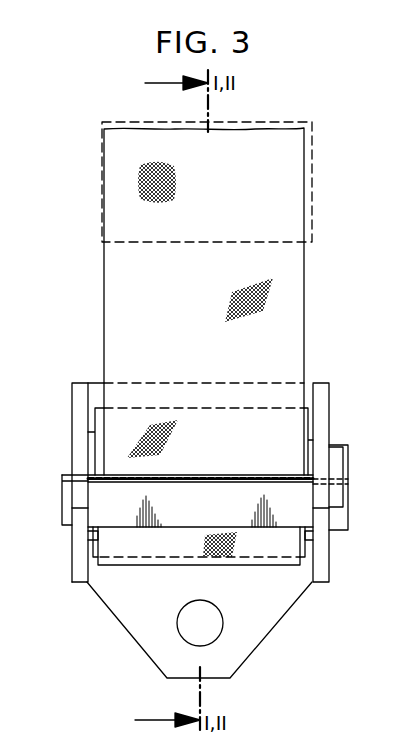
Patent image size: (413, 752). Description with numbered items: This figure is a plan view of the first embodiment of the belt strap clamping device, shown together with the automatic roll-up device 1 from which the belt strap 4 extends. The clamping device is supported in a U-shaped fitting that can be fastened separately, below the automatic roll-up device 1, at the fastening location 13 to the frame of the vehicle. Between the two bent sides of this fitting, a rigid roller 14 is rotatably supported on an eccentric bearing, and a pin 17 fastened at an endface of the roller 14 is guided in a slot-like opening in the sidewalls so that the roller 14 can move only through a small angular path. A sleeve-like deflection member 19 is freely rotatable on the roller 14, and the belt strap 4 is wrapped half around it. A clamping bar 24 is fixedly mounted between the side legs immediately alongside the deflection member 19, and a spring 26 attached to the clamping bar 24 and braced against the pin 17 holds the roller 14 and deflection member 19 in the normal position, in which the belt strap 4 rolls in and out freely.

The automatic roll-up device 1 is at (313, 134).
The belt strap 4 is at (297, 297).
The fastening location 13 is at (211, 629).
The rigid roller 14 is at (310, 440).
The pin 17 is at (345, 452).
The deflection member 19 is at (192, 407).
The clamping bar 24 is at (343, 515).
The spring 26 is at (345, 478).